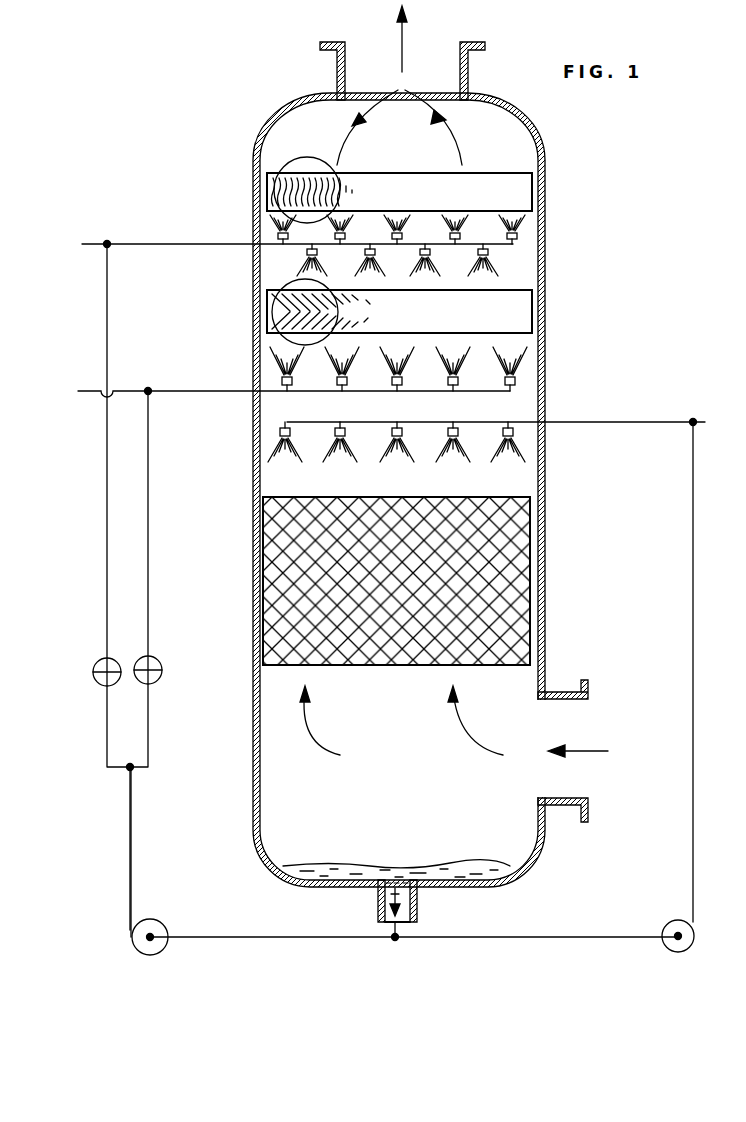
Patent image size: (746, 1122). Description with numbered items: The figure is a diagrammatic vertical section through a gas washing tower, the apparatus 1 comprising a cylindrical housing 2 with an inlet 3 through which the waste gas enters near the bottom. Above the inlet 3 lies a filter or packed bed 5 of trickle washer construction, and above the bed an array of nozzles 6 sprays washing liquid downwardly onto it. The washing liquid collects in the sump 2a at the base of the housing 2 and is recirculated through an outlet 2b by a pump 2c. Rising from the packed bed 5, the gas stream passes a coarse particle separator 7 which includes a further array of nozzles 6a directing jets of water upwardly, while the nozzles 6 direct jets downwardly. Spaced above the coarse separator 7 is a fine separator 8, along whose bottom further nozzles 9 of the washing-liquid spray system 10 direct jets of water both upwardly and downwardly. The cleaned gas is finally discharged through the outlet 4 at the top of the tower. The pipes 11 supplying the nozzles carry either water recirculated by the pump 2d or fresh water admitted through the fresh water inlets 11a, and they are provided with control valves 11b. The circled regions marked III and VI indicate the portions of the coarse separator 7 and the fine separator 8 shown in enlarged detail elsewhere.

The apparatus 1 is at (248, 123).
The cylindrical housing 2 is at (252, 792).
The sump 2a is at (465, 872).
The outlet 2b is at (380, 899).
The pump 2c is at (684, 947).
The pump 2d is at (164, 950).
The inlet 3 is at (570, 728).
The outlet 4 is at (362, 62).
The packed bed 5 is at (498, 572).
The nozzles 6 is at (511, 429).
The nozzles 6a is at (517, 382).
The coarse particle separator 7 is at (512, 310).
The fine separator 8 is at (513, 187).
The nozzles 9 is at (509, 232).
The washing-liquid spray system 10 is at (520, 244).
The pipes 11 is at (107, 530).
The fresh water inlets 11a is at (82, 247).
The control valves 11b is at (140, 677).
The detail section VI is at (268, 191).
The detail section III is at (268, 312).